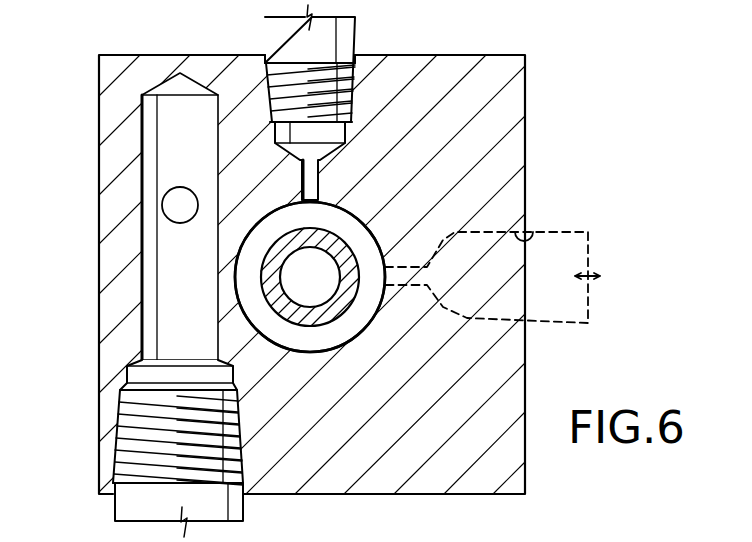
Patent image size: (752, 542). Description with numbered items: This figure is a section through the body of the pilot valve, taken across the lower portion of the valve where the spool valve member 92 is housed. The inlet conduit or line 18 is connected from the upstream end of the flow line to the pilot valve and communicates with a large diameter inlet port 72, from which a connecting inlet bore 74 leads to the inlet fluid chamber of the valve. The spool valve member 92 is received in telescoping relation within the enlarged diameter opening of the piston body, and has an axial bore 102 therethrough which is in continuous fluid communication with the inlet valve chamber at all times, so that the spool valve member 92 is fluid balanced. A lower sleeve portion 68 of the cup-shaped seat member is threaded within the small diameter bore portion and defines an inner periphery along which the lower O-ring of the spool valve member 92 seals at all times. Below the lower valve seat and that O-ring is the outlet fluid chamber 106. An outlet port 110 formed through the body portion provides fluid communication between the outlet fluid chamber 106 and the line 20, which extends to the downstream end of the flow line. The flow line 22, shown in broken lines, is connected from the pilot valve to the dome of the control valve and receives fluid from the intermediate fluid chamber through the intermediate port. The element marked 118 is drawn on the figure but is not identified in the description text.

The inlet conduit 18 is at (127, 513).
The line 20 is at (343, 33).
The flow line 22 is at (590, 325).
The lower sleeve portion 68 is at (241, 247).
The large diameter inlet port 72 is at (170, 118).
The connecting inlet bore 74 is at (167, 211).
The spool valve member 92 is at (267, 275).
The axial bore 102 is at (300, 285).
The outlet fluid chamber 106 is at (243, 240).
The outlet port 110 is at (268, 72).
The hose connection 118 is at (537, 228).